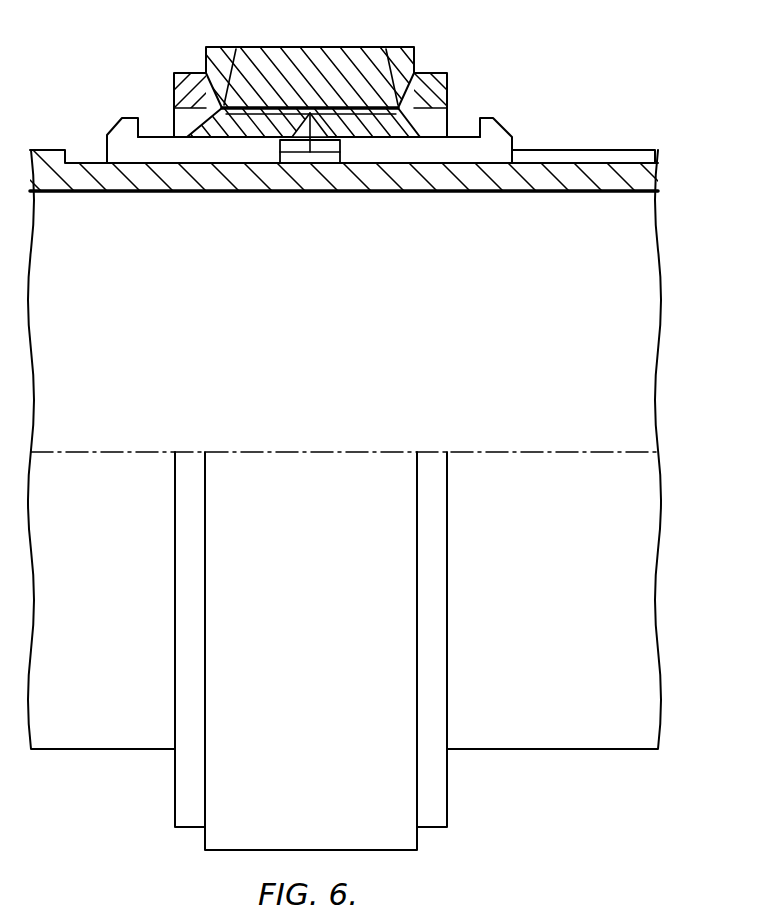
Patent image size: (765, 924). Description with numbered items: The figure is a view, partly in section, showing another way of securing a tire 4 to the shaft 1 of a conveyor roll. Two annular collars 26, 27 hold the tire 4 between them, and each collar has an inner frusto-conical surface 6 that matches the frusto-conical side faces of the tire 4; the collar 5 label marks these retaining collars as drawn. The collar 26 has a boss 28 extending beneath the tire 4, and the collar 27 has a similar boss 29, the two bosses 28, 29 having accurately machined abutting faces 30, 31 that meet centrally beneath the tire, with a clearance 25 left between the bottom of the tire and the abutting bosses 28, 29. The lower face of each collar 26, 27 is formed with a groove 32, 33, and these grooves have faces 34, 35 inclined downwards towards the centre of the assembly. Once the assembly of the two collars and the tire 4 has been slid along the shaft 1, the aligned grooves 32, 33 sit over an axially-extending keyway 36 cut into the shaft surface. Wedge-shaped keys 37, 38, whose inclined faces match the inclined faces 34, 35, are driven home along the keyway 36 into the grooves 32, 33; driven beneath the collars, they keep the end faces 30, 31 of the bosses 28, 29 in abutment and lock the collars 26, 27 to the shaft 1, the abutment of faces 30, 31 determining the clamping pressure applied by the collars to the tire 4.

The shaft 1 is at (590, 168).
The tire 4 is at (292, 66).
The collet jaws 5 is at (221, 78).
The inner frusto-conical surface 6 is at (222, 108).
The clearance 25 is at (323, 108).
The collar 26 is at (188, 86).
The collar 27 is at (438, 86).
The boss 28 is at (248, 128).
The boss 29 is at (363, 130).
The abutting face 30 is at (308, 138).
The abutting face 31 is at (312, 140).
The groove 32 is at (300, 141).
The groove 33 is at (326, 140).
The inclined face 34 is at (210, 136).
The inclined face 35 is at (412, 137).
The keyway 36 is at (608, 157).
The wedge-shaped key 37 is at (126, 145).
The wedge-shaped key 38 is at (500, 135).